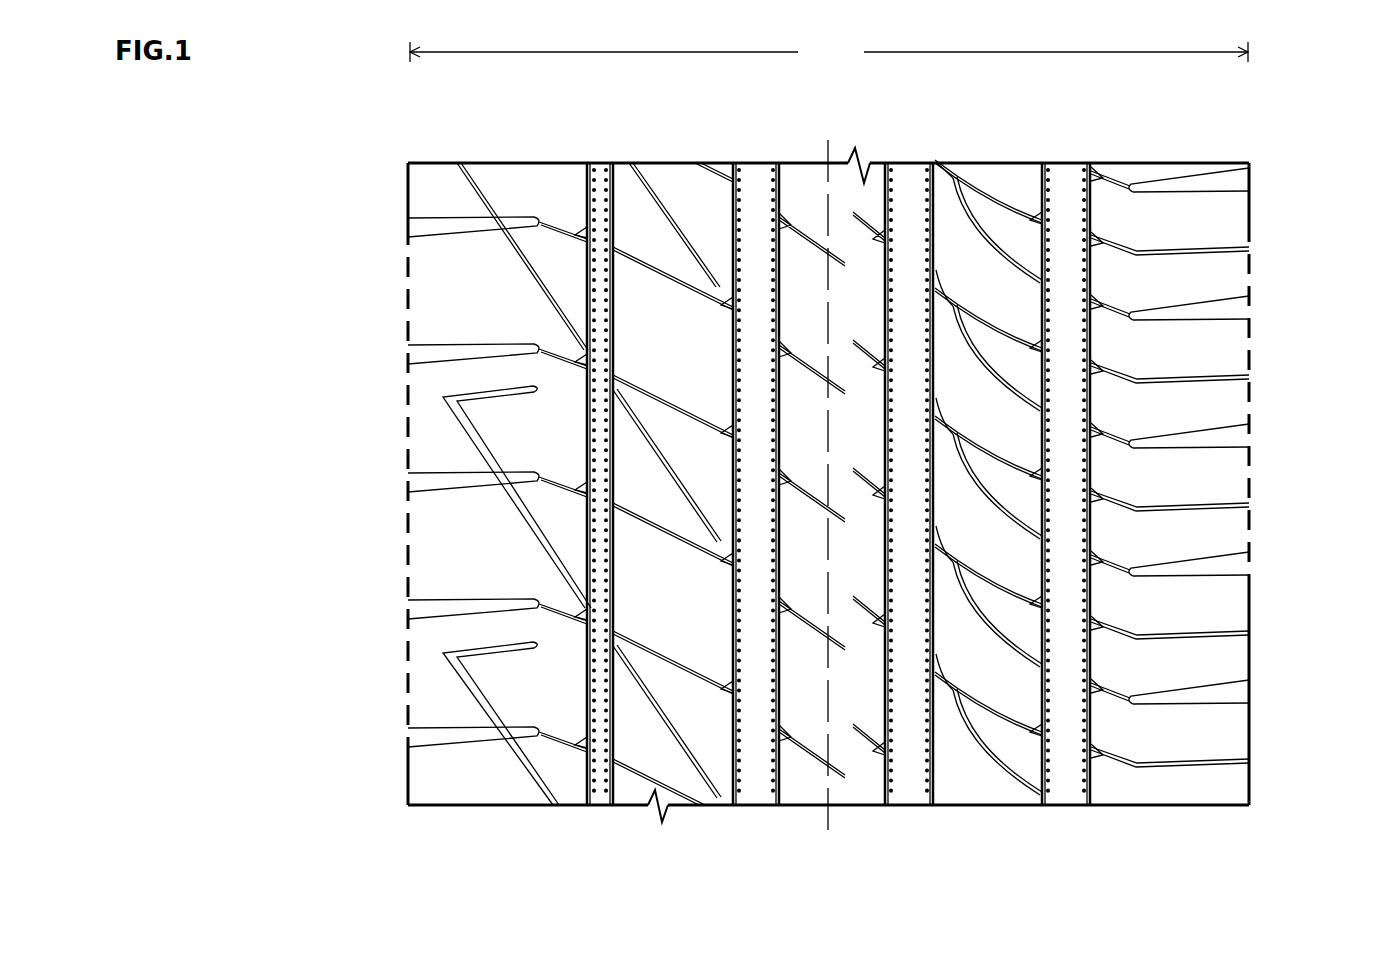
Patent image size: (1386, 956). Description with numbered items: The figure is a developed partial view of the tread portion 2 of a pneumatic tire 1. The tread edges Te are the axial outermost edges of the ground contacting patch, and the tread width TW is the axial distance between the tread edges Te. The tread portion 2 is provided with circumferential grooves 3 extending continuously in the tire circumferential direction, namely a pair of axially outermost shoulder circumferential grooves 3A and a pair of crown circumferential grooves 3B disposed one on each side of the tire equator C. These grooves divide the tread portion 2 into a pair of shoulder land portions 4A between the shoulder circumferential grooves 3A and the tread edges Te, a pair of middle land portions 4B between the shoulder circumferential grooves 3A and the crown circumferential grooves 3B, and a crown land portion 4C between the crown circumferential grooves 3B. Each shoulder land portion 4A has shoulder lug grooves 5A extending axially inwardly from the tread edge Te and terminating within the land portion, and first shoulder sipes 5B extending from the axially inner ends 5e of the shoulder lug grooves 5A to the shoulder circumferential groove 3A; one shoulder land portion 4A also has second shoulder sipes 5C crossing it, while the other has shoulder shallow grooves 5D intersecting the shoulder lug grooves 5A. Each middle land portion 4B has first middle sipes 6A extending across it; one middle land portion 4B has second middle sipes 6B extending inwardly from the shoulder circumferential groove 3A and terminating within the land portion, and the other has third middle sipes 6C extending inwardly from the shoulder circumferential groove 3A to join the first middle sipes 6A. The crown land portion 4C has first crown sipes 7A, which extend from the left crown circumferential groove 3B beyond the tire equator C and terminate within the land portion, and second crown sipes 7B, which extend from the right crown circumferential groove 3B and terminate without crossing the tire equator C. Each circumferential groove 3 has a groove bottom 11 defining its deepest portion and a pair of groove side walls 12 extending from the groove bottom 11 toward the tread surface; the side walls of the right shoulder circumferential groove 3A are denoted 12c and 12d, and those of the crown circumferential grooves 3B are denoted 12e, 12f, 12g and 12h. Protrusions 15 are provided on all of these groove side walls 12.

The pneumatic tire 1 is at (1266, 108).
The tread portion 2 is at (1286, 152).
The circumferential groove 3 is at (986, 491).
The shoulder circumferential groove 3A is at (570, 491).
The crown circumferential groove 3B is at (771, 491).
The shoulder land portion 4A is at (829, 504).
The middle land portion 4B is at (829, 446).
The crown land portion 4C is at (829, 433).
The shoulder lug groove 5A is at (470, 353).
The first shoulder sipe 5B is at (585, 366).
The second shoulder sipe 5C is at (1205, 372).
The shoulder shallow groove 5D is at (470, 433).
The axially inner end of shoulder lug groove 5e is at (543, 357).
The first middle sipe 6A is at (665, 656).
The second middle sipe 6B is at (672, 482).
The third middle sipe 6C is at (997, 530).
The first crown sipe 7A is at (800, 632).
The second crown sipe 7B is at (862, 602).
The groove bottom 11 is at (602, 790).
The groove side wall 12 is at (588, 758).
The groove side wall 12c is at (1088, 790).
The groove side wall 12d is at (1043, 790).
The groove side wall 12e is at (742, 790).
The groove side wall 12f is at (776, 790).
The groove side wall 12g is at (889, 790).
The groove side wall 12h is at (930, 790).
The protrusion 15 is at (607, 613).
The tread width TW is at (829, 52).
The tire equator C is at (827, 470).
The tread edge Te is at (406, 186).